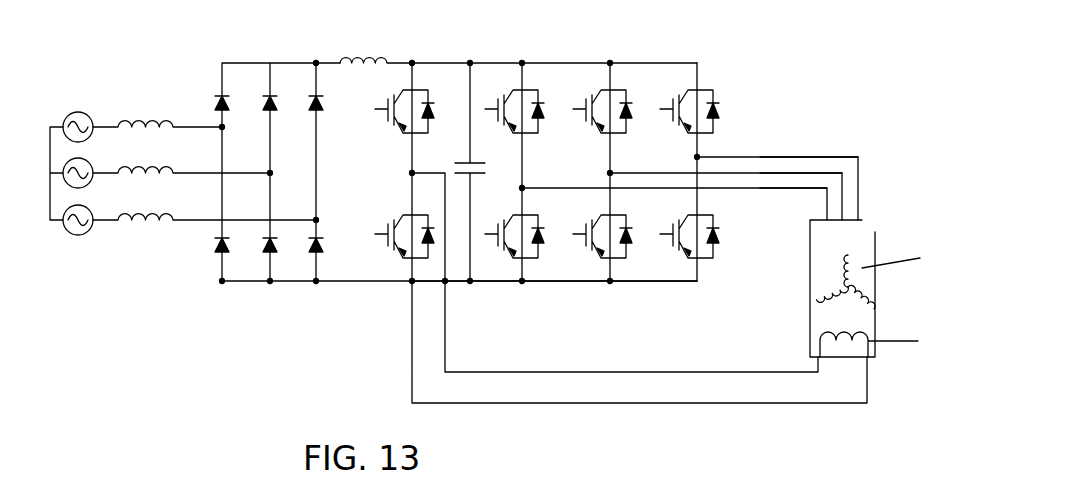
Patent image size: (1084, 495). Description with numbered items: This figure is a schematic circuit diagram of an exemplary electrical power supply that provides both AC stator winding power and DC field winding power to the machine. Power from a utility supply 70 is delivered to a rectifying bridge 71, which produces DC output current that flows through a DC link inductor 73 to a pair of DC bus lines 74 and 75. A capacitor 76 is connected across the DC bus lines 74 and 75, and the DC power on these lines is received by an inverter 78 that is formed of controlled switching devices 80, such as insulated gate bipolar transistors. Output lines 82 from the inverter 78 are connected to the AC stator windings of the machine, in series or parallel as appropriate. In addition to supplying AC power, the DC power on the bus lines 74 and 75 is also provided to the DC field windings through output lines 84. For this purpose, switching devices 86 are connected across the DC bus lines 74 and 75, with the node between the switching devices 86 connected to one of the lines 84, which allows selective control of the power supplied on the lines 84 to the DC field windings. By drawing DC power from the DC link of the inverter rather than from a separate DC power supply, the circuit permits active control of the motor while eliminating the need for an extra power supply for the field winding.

The utility supply 70 is at (78, 238).
The rectifying bridge 71 is at (270, 62).
The DC link inductor 73 is at (388, 55).
The DC bus line 74 is at (493, 58).
The DC bus line 75 is at (490, 284).
The capacitor 76 is at (478, 163).
The inverter 78 is at (630, 58).
The controlled switching devices 80 is at (546, 135).
The output lines 82 is at (807, 192).
The output lines 84 is at (592, 403).
The switching devices 86 is at (393, 134).